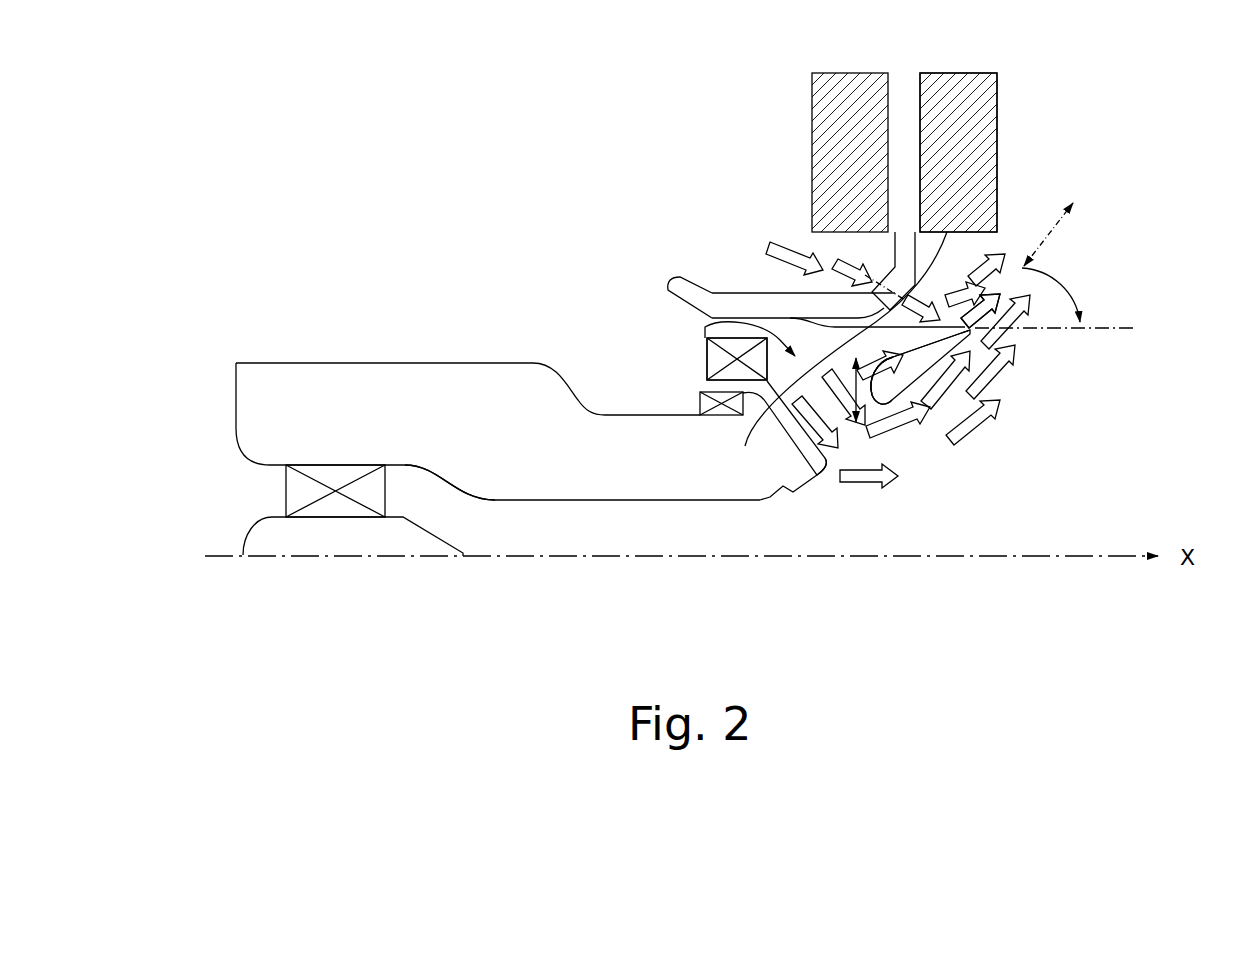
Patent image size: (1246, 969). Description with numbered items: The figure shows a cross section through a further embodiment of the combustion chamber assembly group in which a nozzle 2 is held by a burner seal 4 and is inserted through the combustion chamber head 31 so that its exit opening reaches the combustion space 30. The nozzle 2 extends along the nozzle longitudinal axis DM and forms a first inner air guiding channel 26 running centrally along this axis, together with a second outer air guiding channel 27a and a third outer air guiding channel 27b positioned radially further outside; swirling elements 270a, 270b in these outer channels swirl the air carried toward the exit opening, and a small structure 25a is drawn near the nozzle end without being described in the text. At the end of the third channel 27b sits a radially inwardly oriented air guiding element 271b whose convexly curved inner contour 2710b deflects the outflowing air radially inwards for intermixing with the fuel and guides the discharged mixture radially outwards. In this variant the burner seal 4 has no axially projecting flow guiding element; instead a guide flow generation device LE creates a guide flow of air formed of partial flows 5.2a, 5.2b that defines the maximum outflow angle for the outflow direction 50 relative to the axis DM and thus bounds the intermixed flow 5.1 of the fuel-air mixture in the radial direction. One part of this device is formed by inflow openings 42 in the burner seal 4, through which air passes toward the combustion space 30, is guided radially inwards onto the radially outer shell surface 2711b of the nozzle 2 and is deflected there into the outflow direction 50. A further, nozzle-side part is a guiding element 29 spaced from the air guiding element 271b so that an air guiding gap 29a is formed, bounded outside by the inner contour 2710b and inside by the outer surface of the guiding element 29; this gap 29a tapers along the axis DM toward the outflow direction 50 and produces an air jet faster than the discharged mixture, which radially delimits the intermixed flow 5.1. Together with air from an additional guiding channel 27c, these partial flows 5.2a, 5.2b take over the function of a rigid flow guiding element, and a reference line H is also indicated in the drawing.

The nozzle 2 is at (364, 344).
The burner seal 4 is at (721, 279).
The first inner air guiding channel 26 is at (472, 524).
The second outer air guiding channel 27a is at (815, 466).
The third outer air guiding channel 27b is at (706, 338).
The additional guiding channel 27c is at (836, 354).
The swirling element 270a is at (700, 402).
The swirling element 270b is at (707, 357).
The air guiding element 271b is at (857, 424).
The inner contour 2710b is at (905, 345).
The radially outer shell surface 2711b is at (832, 326).
The lip 25a is at (777, 499).
The guiding element 29 is at (1031, 352).
The air guiding gap 29a is at (913, 352).
The combustion space 30 is at (1180, 137).
The combustion chamber head 31 is at (842, 152).
The inflow opening 42 is at (892, 288).
The outflow direction 50 is at (1058, 218).
The intermixed flow 5.1 is at (988, 432).
The partial flow of the guide flow 5.2a is at (996, 295).
The partial flow of the guide flow 5.2b is at (1002, 252).
The reference plane H is at (1127, 328).
The guide flow generation device LE is at (1015, 338).
The nozzle longitudinal axis DM is at (1086, 560).